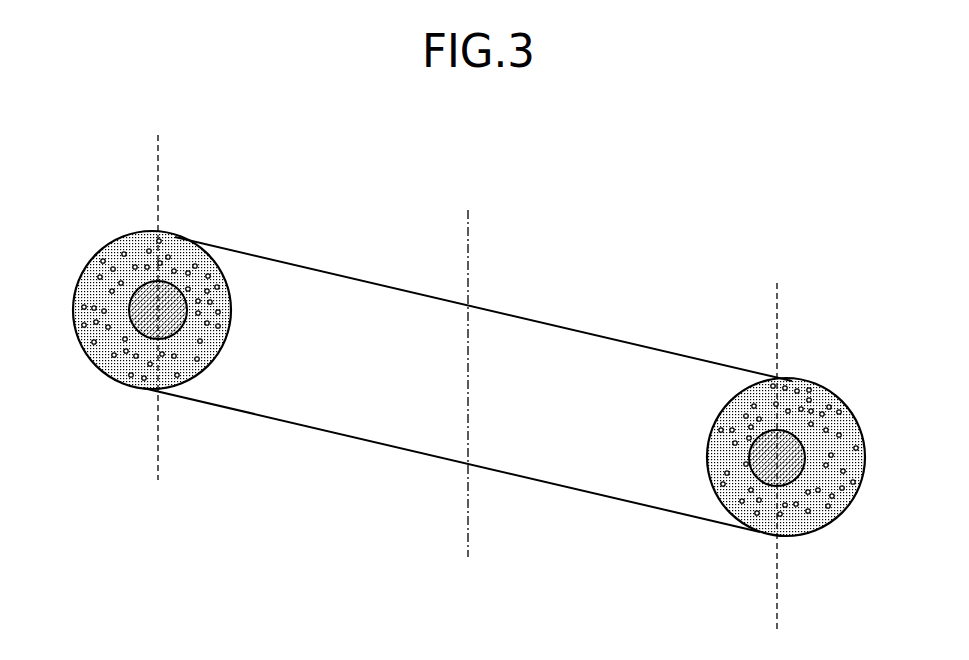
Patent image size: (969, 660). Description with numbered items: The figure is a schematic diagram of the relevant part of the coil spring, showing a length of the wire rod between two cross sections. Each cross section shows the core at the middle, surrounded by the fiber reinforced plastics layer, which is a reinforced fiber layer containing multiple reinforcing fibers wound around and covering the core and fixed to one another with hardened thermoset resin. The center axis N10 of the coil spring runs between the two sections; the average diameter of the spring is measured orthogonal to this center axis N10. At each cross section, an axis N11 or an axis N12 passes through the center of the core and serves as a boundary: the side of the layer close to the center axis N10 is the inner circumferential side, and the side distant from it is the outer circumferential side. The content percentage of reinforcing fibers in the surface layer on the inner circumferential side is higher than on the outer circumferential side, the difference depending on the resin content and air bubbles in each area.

The center axis N10 is at (470, 255).
The axis N11 is at (160, 172).
The axis N12 is at (779, 322).